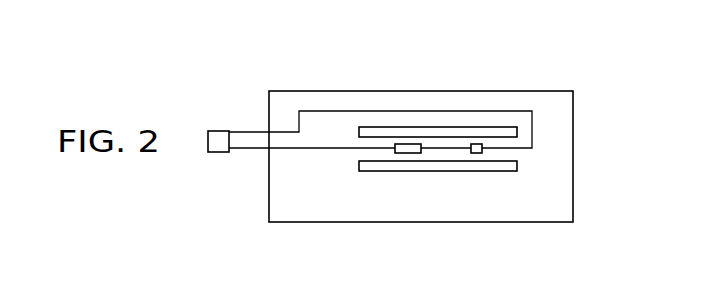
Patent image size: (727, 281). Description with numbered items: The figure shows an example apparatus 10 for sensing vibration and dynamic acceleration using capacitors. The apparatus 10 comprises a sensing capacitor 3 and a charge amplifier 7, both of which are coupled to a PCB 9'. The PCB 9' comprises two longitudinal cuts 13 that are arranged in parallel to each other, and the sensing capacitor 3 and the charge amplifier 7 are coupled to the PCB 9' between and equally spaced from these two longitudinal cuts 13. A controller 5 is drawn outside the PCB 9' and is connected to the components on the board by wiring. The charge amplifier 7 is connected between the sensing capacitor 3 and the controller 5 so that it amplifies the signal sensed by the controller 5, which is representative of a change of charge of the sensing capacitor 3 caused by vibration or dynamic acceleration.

The sensing capacitor 3 is at (477, 144).
The controller 5 is at (220, 131).
The charge amplifier 7 is at (407, 144).
The PCB 9' is at (421, 127).
The apparatus 10 is at (593, 74).
The longitudinal cuts 13 is at (517, 131).